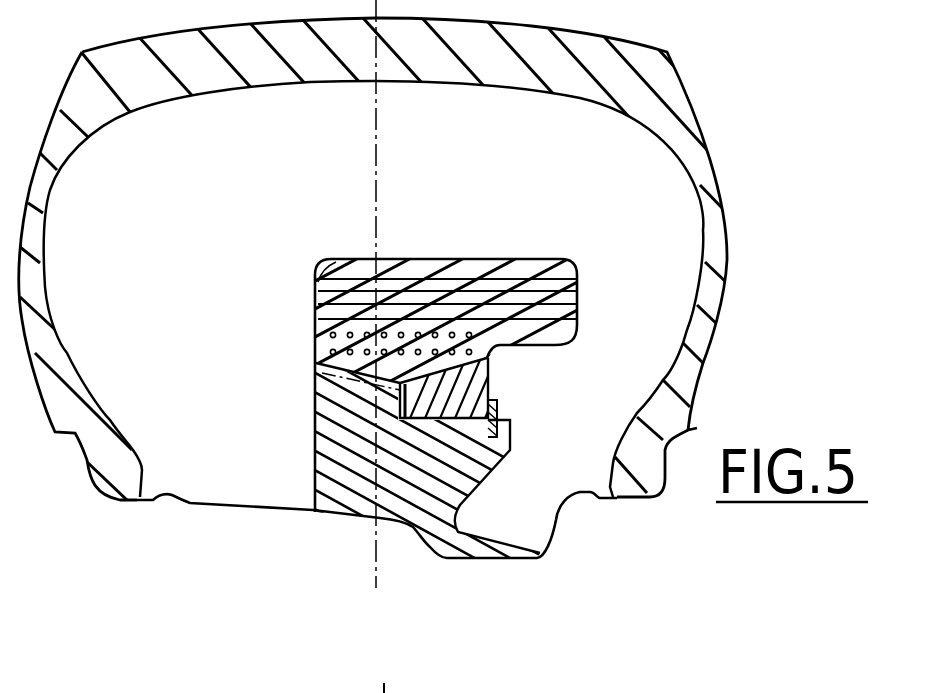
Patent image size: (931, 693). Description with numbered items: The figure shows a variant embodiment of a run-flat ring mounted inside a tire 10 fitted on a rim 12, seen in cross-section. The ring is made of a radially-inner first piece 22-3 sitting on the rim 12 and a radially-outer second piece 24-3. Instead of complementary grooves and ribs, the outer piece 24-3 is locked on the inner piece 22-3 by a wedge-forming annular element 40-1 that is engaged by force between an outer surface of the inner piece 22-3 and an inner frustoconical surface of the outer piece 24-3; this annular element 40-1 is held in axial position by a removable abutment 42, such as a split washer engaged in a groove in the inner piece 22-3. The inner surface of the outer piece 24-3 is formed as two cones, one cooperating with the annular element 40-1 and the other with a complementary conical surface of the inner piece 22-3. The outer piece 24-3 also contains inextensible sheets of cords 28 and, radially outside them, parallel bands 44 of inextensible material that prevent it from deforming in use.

The tire 10 is at (718, 192).
The rim 12 is at (278, 512).
The radially-inner first piece 22-3 is at (315, 405).
The radially-outer second piece 24-3 is at (481, 258).
The inextensible sheets of cords 28 is at (337, 340).
The wedge-forming annular element 40-1 is at (480, 378).
The removable abutment 42 is at (498, 404).
The parallel bands of inextensible material 44 is at (326, 270).